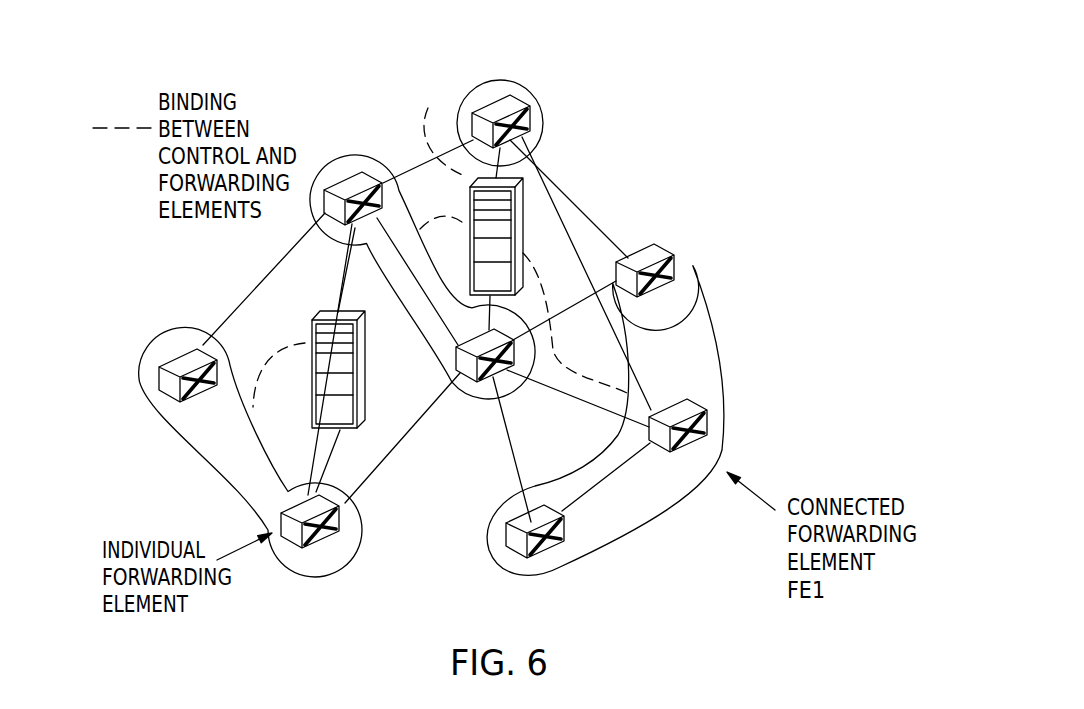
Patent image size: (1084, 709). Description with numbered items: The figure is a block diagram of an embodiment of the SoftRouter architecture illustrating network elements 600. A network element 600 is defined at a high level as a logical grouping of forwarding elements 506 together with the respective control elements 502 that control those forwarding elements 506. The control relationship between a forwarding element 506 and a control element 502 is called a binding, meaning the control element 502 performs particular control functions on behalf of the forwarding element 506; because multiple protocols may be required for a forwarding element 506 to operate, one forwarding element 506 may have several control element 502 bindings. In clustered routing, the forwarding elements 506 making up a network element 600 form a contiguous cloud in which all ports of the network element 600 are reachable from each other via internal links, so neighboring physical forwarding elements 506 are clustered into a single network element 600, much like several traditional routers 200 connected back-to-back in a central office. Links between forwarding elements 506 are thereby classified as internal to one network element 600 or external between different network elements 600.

The forwarding element 506 is at (364, 168).
The traditional router 200 is at (470, 190).
The control element 502 is at (367, 341).
The network element 600 is at (717, 132).